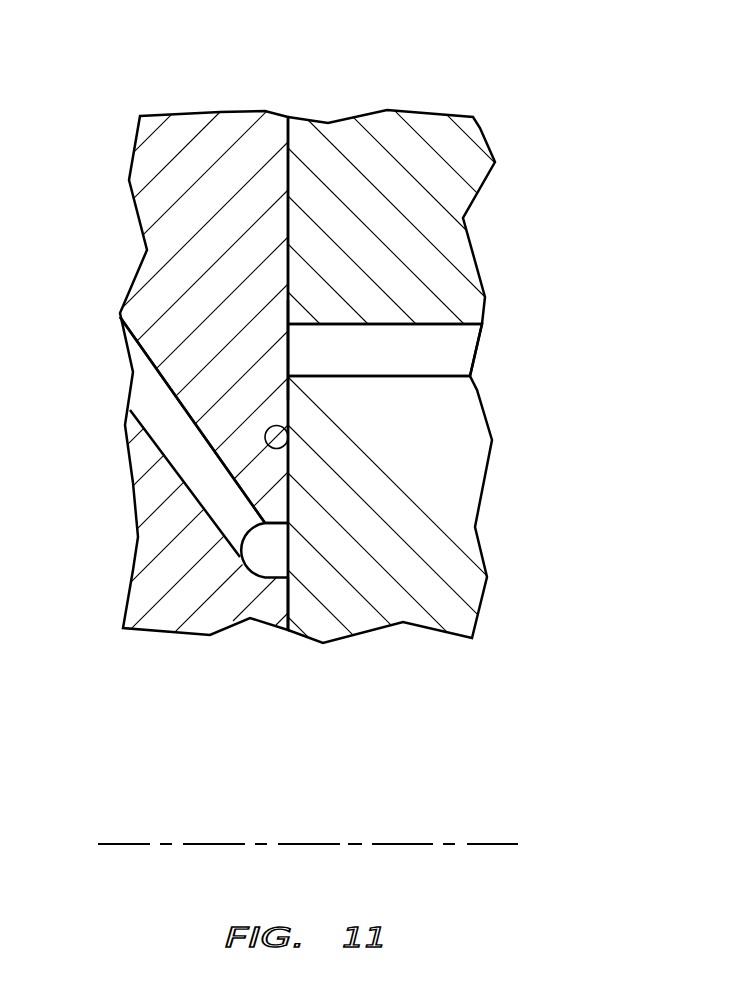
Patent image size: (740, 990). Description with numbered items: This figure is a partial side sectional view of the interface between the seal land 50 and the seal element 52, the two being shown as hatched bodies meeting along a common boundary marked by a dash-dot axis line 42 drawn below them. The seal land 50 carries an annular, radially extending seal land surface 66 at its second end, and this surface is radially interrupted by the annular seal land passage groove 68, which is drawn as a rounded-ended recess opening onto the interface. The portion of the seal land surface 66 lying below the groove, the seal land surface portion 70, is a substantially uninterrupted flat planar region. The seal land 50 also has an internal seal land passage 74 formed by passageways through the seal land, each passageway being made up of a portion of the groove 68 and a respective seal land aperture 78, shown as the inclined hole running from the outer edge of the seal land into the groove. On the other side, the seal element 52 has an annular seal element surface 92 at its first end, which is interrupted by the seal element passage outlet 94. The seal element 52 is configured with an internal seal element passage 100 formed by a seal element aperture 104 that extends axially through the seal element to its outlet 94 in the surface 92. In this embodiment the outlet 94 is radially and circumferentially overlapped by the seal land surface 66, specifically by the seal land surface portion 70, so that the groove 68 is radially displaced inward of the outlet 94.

The rotor axis 42 is at (497, 841).
The seal land 50 is at (218, 106).
The seal element 52 is at (421, 104).
The seal land surface 66 is at (288, 480).
The seal land passage groove 68 is at (260, 558).
The seal land surface portion 70 is at (290, 598).
The seal land passage 74 is at (194, 491).
The seal land aperture 78 is at (145, 388).
The seal element surface 92 is at (287, 426).
The seal element passage outlet 94 is at (287, 350).
The seal element passage 100 is at (432, 342).
The seal element aperture 104 is at (455, 352).